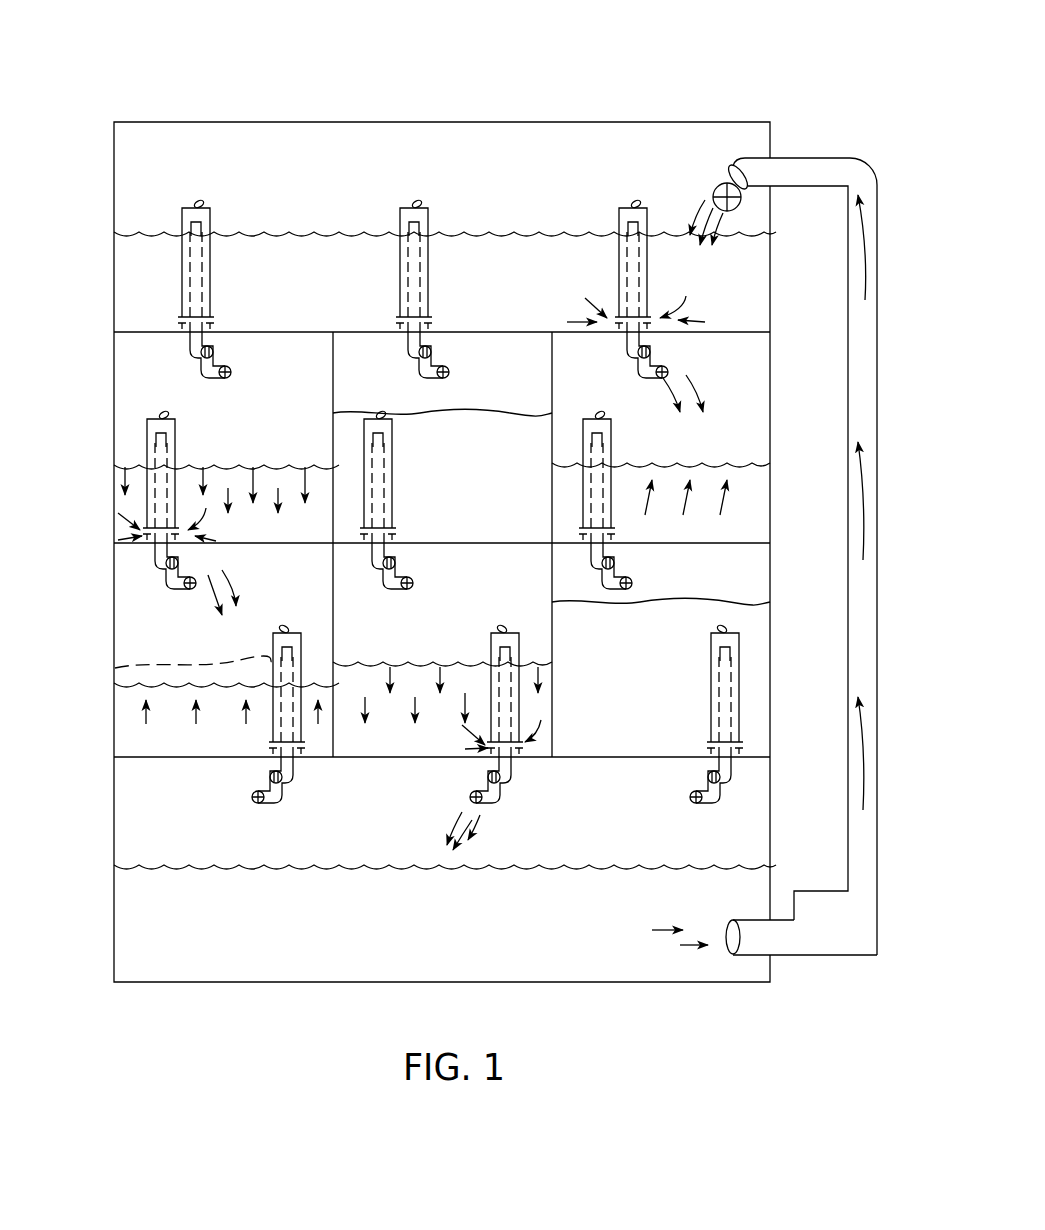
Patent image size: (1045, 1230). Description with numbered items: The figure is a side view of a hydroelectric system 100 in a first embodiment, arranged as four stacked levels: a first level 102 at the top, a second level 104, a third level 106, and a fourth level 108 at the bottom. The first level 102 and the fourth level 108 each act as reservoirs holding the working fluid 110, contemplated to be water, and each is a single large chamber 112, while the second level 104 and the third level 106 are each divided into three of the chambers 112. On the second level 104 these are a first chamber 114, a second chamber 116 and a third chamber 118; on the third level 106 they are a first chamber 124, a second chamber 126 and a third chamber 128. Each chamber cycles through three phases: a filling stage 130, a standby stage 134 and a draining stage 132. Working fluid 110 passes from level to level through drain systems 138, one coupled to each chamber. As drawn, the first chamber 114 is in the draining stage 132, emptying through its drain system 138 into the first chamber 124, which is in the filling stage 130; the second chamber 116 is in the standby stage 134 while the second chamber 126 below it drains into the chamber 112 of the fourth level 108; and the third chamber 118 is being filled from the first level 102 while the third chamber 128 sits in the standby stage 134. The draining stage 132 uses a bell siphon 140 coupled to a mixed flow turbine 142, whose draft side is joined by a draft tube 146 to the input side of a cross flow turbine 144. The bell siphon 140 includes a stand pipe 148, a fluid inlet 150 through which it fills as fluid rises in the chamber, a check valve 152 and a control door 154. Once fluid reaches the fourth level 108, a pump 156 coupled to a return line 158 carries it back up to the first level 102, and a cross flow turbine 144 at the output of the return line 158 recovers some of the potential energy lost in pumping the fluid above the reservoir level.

The hydroelectric system 100 is at (130, 45).
The first level 102 is at (108, 206).
The second level 104 is at (108, 368).
The third level 106 is at (108, 598).
The fourth level 108 is at (105, 860).
The working fluid 110 is at (130, 252).
The chamber 112 is at (787, 437).
The first chamber 114 is at (740, 517).
The second chamber 116 is at (504, 359).
The third chamber 118 is at (734, 359).
The first chamber 124 is at (286, 569).
The second chamber 126 is at (504, 569).
The third chamber 128 is at (729, 569).
The filling stage 130 is at (125, 716).
The draining stage 132 is at (190, 498).
The standby stage 134 is at (753, 657).
The drain system 138 is at (165, 292).
The bell siphon 140 is at (650, 222).
The mixed flow turbine 142 is at (648, 352).
The cross flow turbine 144 is at (742, 205).
The draft tube 146 is at (733, 767).
The stand pipe 148 is at (113, 668).
The fluid inlet 150 is at (256, 745).
The check valve 152 is at (282, 630).
The control door 154 is at (284, 782).
The pump 156 is at (858, 932).
The return line 158 is at (877, 867).